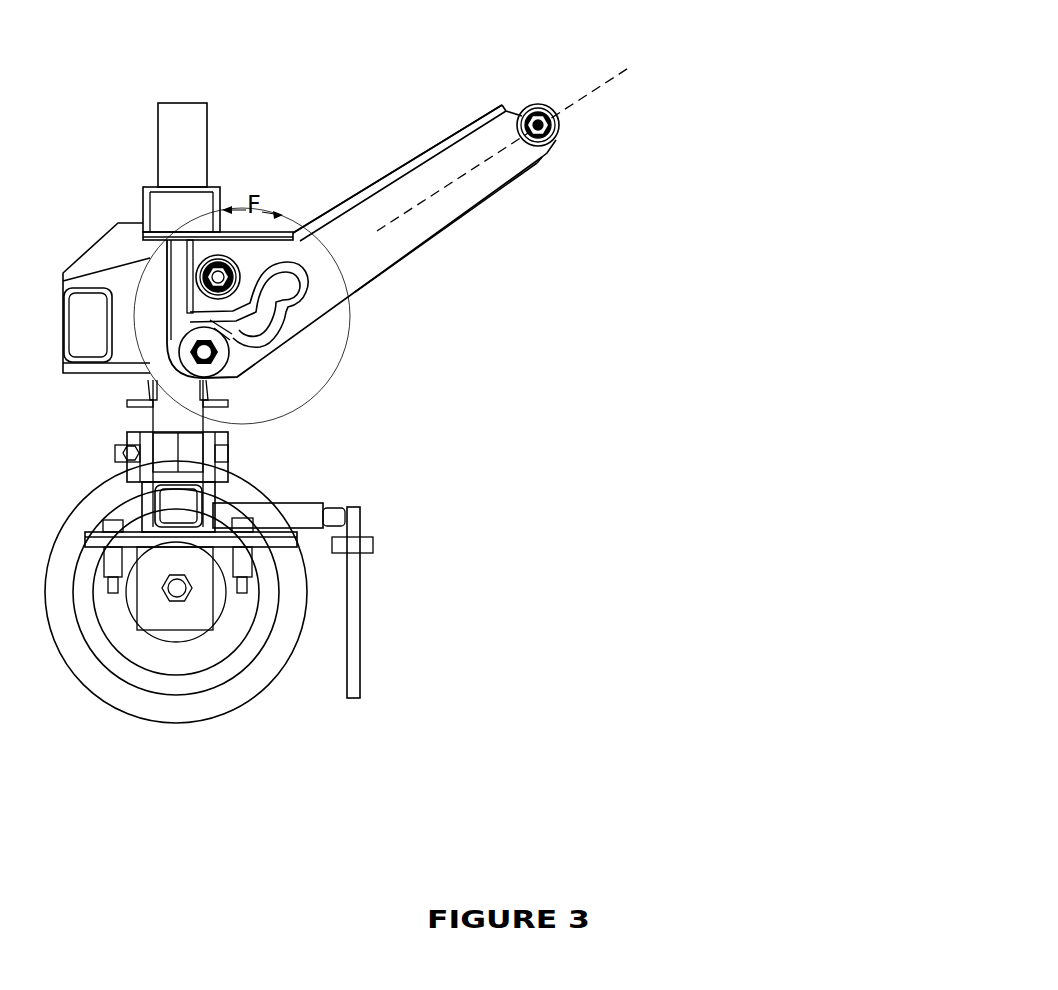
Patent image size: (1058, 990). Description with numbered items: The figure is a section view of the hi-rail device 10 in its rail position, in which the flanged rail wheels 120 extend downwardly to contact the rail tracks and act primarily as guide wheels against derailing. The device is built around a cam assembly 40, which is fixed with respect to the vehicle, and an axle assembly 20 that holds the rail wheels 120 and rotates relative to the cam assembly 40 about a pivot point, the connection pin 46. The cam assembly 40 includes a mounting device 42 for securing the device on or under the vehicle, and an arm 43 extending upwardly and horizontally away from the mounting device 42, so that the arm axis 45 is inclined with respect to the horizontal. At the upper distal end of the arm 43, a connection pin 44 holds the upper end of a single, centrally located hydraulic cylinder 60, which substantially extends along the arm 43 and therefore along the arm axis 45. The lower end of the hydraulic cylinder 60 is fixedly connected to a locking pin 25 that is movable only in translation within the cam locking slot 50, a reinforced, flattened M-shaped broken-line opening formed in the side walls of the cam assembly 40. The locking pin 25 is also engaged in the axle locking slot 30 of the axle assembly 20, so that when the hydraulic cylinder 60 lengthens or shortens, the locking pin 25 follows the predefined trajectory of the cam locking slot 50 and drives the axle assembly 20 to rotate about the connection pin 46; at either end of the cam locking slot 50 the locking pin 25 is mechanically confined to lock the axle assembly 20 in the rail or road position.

The hi-rail device 10 is at (345, 74).
The mounting device 42 is at (165, 232).
The arm 43 is at (437, 168).
The arm axis 45 is at (607, 80).
The connection pin 44 is at (553, 133).
The cam assembly 40 is at (550, 156).
The hydraulic cylinder 60 is at (501, 200).
The connection pin 46 is at (240, 283).
The cam locking slot 50 is at (273, 320).
The axle locking slot 30 is at (232, 332).
The locking pin 25 is at (223, 362).
The axle assembly 20 is at (233, 452).
The rail wheels 120 is at (232, 705).